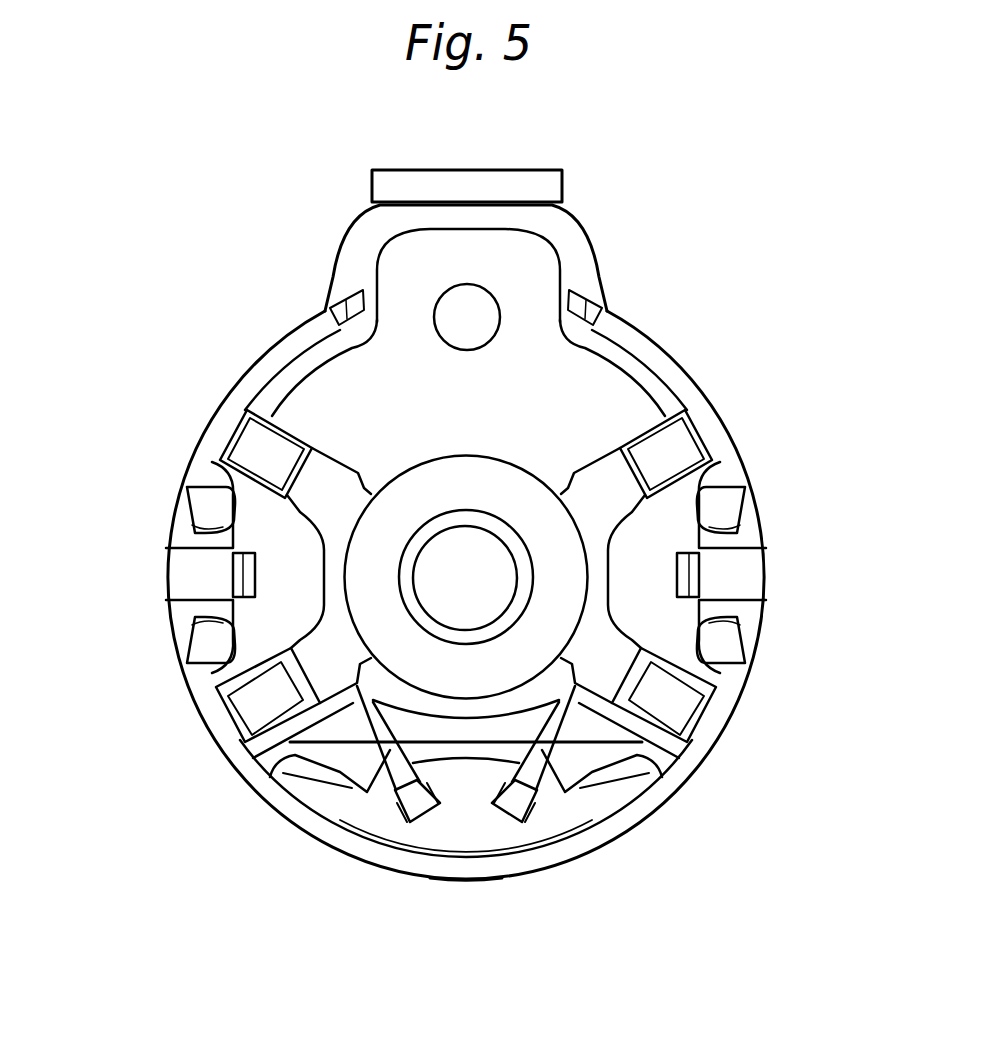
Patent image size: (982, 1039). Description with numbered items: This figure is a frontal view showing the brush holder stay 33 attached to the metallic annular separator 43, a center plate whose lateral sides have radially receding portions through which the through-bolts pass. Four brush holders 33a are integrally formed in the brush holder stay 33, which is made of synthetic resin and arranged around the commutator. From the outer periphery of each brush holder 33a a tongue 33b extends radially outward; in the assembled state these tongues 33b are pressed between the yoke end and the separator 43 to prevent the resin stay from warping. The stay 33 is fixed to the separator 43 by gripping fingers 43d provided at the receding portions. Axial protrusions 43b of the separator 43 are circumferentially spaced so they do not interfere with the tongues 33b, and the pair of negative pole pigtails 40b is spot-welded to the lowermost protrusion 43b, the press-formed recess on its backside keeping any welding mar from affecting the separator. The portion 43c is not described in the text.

The brush holder stay 33 is at (352, 387).
The brush holder 33a is at (622, 450).
The tongue 33b is at (218, 423).
The pigtail 40b is at (390, 752).
The annular separator 43 is at (662, 360).
The axial protrusion 43b is at (205, 630).
The bottom wall of housing 43c is at (458, 882).
The gripping finger 43d is at (233, 575).